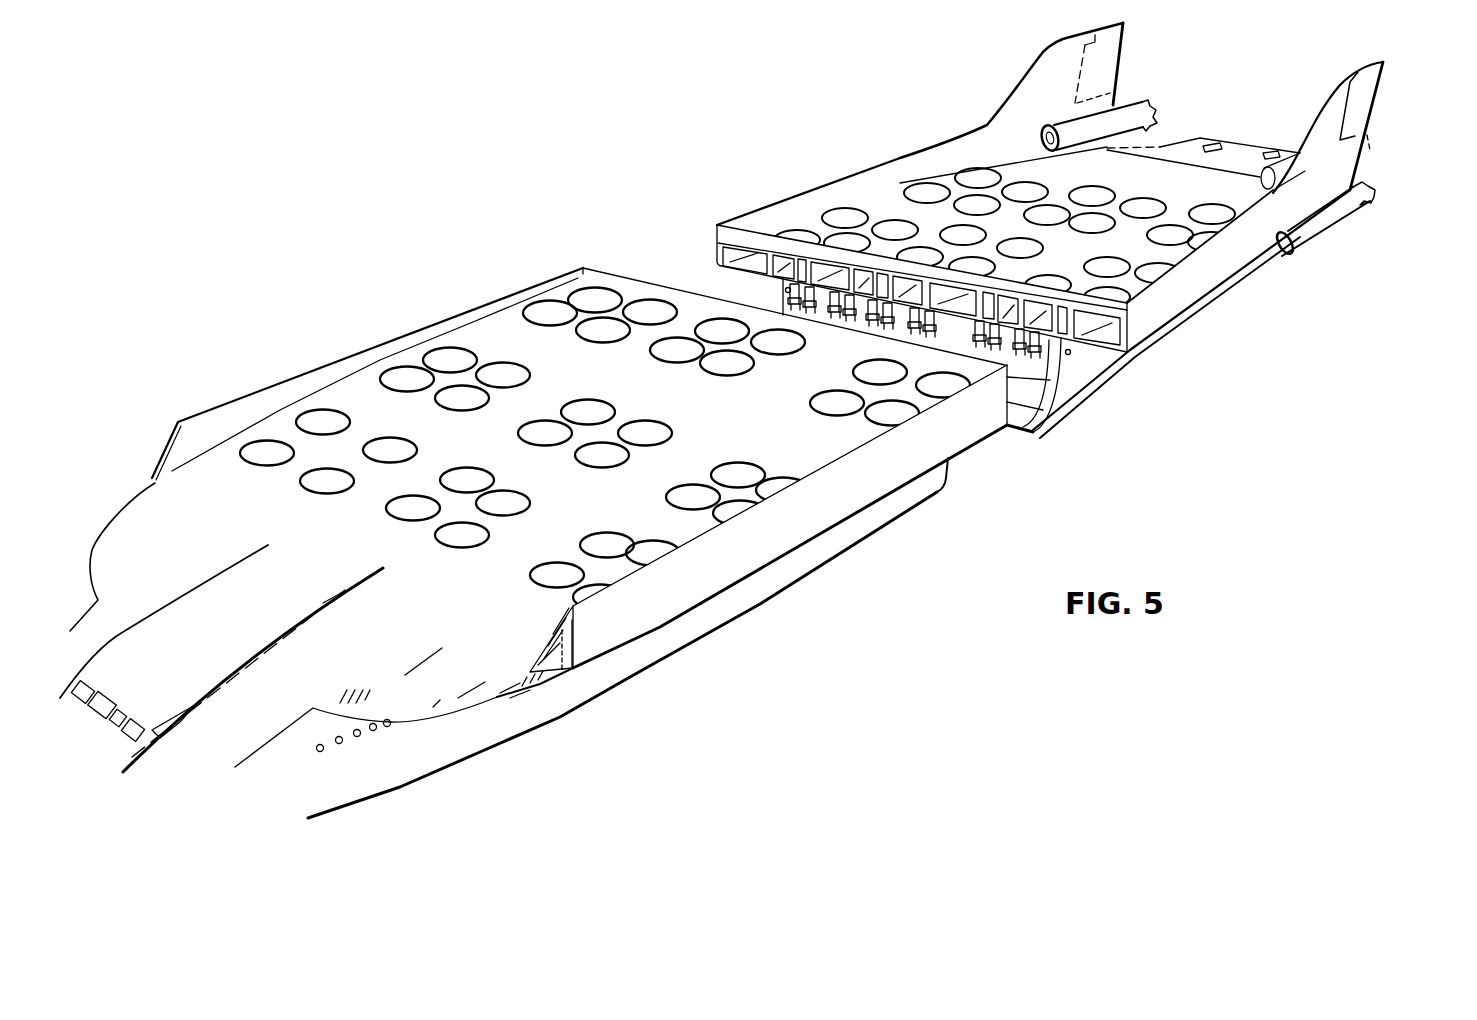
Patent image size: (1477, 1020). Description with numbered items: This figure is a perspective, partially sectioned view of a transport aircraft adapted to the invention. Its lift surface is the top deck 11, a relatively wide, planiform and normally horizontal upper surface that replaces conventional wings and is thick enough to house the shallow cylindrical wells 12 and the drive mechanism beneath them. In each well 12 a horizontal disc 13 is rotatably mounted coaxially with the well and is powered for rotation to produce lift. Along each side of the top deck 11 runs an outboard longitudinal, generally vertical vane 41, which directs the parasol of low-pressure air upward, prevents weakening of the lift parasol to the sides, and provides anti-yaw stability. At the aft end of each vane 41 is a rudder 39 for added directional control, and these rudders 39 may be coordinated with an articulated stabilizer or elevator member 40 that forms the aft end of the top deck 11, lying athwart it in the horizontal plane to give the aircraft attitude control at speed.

The top deck 11 is at (490, 333).
The well 12 is at (540, 308).
The disc 13 is at (548, 310).
The rudder 39 is at (1362, 103).
The stabilizer or elevator member 40 is at (1238, 148).
The outboard vane 41 is at (248, 403).